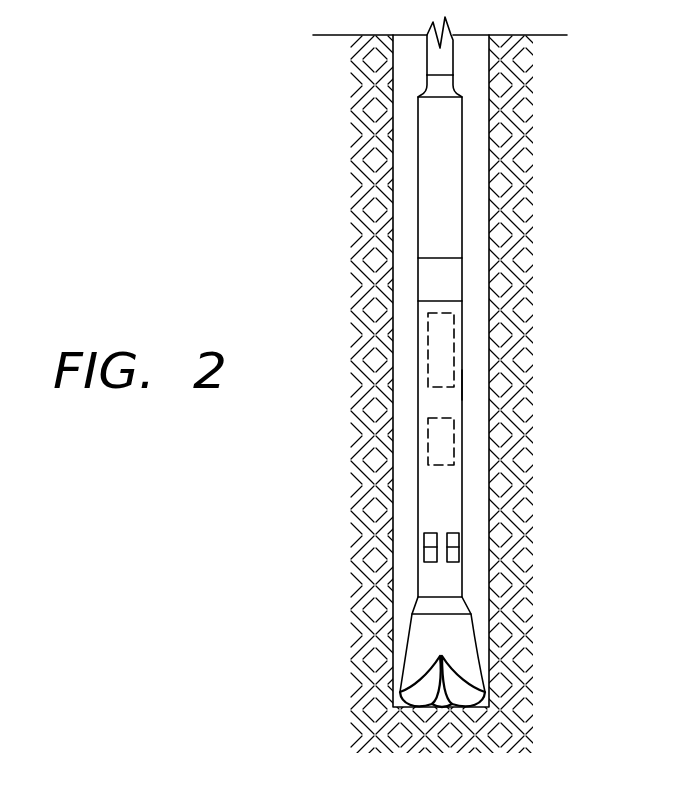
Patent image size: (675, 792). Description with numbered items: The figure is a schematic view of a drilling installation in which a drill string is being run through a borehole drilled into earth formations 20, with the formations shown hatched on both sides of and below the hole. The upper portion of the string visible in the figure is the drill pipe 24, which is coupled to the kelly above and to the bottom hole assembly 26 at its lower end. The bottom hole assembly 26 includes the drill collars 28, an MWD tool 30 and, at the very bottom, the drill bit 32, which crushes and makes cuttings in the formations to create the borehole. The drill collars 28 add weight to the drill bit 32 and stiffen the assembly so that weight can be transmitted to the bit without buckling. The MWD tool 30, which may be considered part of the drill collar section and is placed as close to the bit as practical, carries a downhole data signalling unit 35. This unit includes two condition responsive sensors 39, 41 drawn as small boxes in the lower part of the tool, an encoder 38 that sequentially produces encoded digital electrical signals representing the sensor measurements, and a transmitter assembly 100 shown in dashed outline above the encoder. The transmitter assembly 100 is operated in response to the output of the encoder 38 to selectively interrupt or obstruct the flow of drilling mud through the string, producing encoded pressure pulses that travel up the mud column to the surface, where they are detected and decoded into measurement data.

The earth formations 20 is at (310, 192).
The drill pipe 24 is at (441, 58).
The drill collars 28 is at (441, 205).
The downhole data signalling unit 35 is at (452, 304).
The bottom hole assembly 26 is at (472, 358).
The transmitter assembly 100 is at (442, 333).
The MWD tool 30 is at (468, 386).
The encoder 38 is at (441, 442).
The condition responsive sensor 39 is at (424, 534).
The condition responsive sensor 41 is at (459, 533).
The drill bit 32 is at (443, 637).